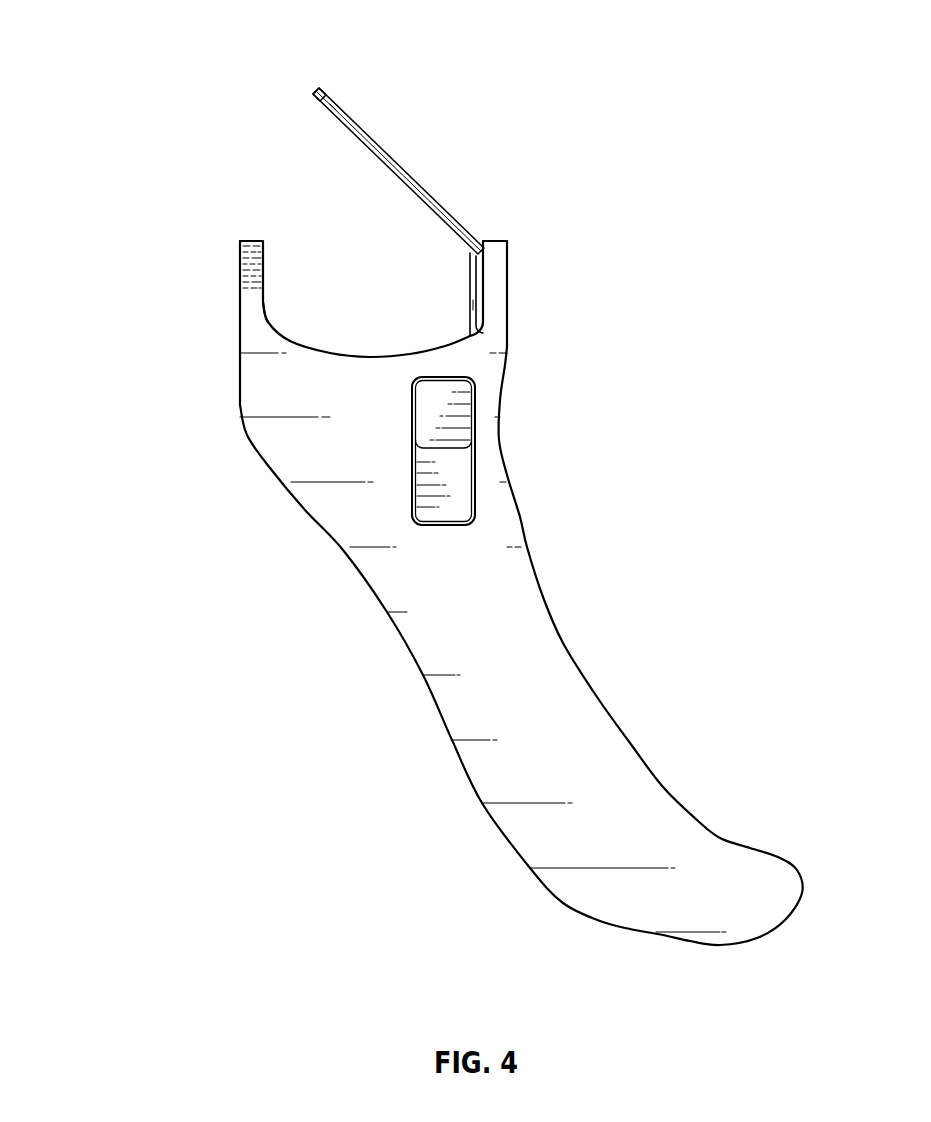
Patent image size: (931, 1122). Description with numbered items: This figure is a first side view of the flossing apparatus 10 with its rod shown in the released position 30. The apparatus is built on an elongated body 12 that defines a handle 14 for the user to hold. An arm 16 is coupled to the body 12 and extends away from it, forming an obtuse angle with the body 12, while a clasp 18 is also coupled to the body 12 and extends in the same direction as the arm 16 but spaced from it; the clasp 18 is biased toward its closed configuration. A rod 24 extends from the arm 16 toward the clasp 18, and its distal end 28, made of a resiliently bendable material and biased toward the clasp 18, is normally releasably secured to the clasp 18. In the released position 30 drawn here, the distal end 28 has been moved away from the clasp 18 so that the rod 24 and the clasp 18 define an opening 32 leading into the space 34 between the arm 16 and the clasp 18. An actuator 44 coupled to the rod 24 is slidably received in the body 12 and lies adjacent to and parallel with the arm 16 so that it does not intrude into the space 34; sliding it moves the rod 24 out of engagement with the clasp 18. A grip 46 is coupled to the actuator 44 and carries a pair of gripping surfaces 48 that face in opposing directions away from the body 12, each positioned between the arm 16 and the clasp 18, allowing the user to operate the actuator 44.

The flossing apparatus 10 is at (137, 62).
The body 12 is at (604, 642).
The handle 14 is at (447, 713).
The arm 16 is at (502, 290).
The clasp 18 is at (207, 268).
The rod 24 is at (378, 152).
The distal end 28 is at (315, 91).
The released position 30 is at (357, 58).
The opening 32 is at (289, 208).
The space 34 is at (308, 300).
The actuator 44 is at (468, 272).
The grip 46 is at (490, 420).
The gripping surfaces 48 is at (463, 400).